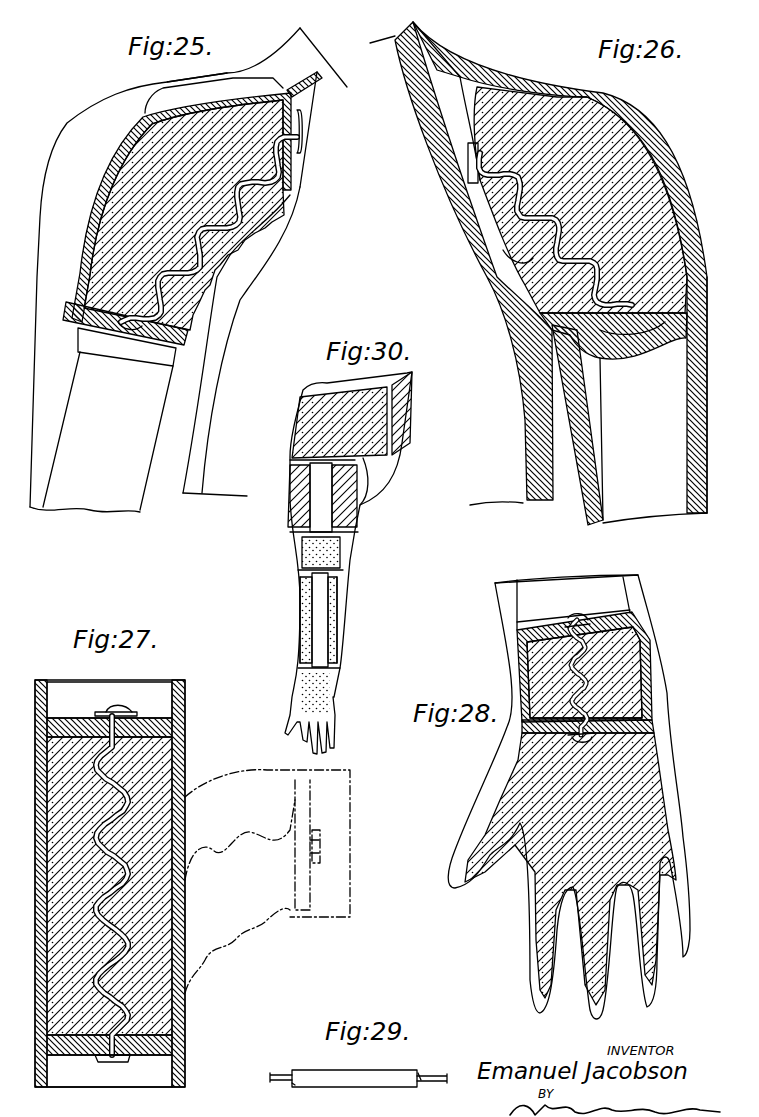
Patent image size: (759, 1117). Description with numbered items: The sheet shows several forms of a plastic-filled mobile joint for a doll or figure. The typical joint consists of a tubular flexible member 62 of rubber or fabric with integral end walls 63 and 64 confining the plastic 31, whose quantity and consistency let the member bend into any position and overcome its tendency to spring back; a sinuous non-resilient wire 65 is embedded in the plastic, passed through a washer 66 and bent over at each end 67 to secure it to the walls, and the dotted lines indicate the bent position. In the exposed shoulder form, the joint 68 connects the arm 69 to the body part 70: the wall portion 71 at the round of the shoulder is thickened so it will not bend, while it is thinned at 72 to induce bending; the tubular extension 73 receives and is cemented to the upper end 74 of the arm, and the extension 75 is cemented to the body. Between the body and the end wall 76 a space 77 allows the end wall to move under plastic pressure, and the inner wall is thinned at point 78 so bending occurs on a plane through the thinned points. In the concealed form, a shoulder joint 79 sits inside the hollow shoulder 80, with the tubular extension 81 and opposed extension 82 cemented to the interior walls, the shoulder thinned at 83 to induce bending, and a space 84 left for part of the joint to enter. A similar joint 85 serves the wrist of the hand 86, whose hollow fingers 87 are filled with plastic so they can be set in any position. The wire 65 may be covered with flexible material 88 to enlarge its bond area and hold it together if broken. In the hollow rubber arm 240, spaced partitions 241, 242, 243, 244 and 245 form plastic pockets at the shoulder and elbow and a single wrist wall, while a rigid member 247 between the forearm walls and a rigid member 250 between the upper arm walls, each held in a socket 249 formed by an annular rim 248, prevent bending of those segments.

In FIG. 25, the plastic 31 is at (207, 233).
In FIG. 26, the plastic 31 is at (555, 229).
In FIG. 30, the plastic 31 is at (314, 400).
In FIG. 27, the plastic 31 is at (165, 781).
In FIG. 28, the plastic 31 is at (632, 690).
In FIG. 27, the tubular flexible member 62 is at (185, 757).
In FIG. 27, the end wall 63 is at (153, 715).
In FIG. 27, the end wall 64 is at (150, 1056).
In FIG. 27, the sinuous wire 65 is at (125, 855).
In FIG. 28, the sinuous wire 65 is at (580, 678).
In FIG. 29, the sinuous wire 65 is at (273, 1082).
In FIG. 27, the washer 66 is at (97, 711).
In FIG. 27, the bent-over end 67 is at (120, 706).
In FIG. 26, the joint 68 is at (692, 165).
In FIG. 26, the arm 69 is at (708, 430).
In FIG. 26, the body part 70 is at (525, 375).
In FIG. 26, the wall portion 71 is at (703, 214).
In FIG. 26, the thinned wall portion 72 is at (545, 93).
In FIG. 26, the tubular extension 73 is at (708, 335).
In FIG. 26, the upper end of the arm 74 is at (628, 439).
In FIG. 26, the extension 75 is at (440, 52).
In FIG. 26, the end wall 76 is at (485, 207).
In FIG. 26, the space 77 is at (456, 148).
In FIG. 26, the thinned point 78 is at (492, 250).
In FIG. 25, the shoulder joint 79 is at (103, 175).
In FIG. 25, the hollow shoulder 80 is at (54, 213).
In FIG. 25, the tubular extension 81 is at (307, 86).
In FIG. 25, the opposed extension 82 is at (80, 352).
In FIG. 25, the thinned portion 83 is at (207, 78).
In FIG. 25, the space 84 is at (183, 98).
In FIG. 28, the joint 85 is at (640, 651).
In FIG. 28, the hand 86 is at (665, 750).
In FIG. 28, the fingers 87 is at (690, 915).
In FIG. 29, the flexible material cover 88 is at (351, 1087).
In FIG. 30, the rubber arm 240 is at (295, 425).
In FIG. 30, the partition 241 is at (412, 427).
In FIG. 30, the partition 242 is at (290, 460).
In FIG. 30, the partition 243 is at (345, 533).
In FIG. 30, the partition 244 is at (340, 575).
In FIG. 30, the partition 245 is at (330, 670).
In FIG. 30, the rigid member 247 is at (313, 633).
In FIG. 30, the annular rim 248 is at (337, 590).
In FIG. 30, the socket 249 is at (300, 583).
In FIG. 30, the rigid member 250 is at (315, 508).